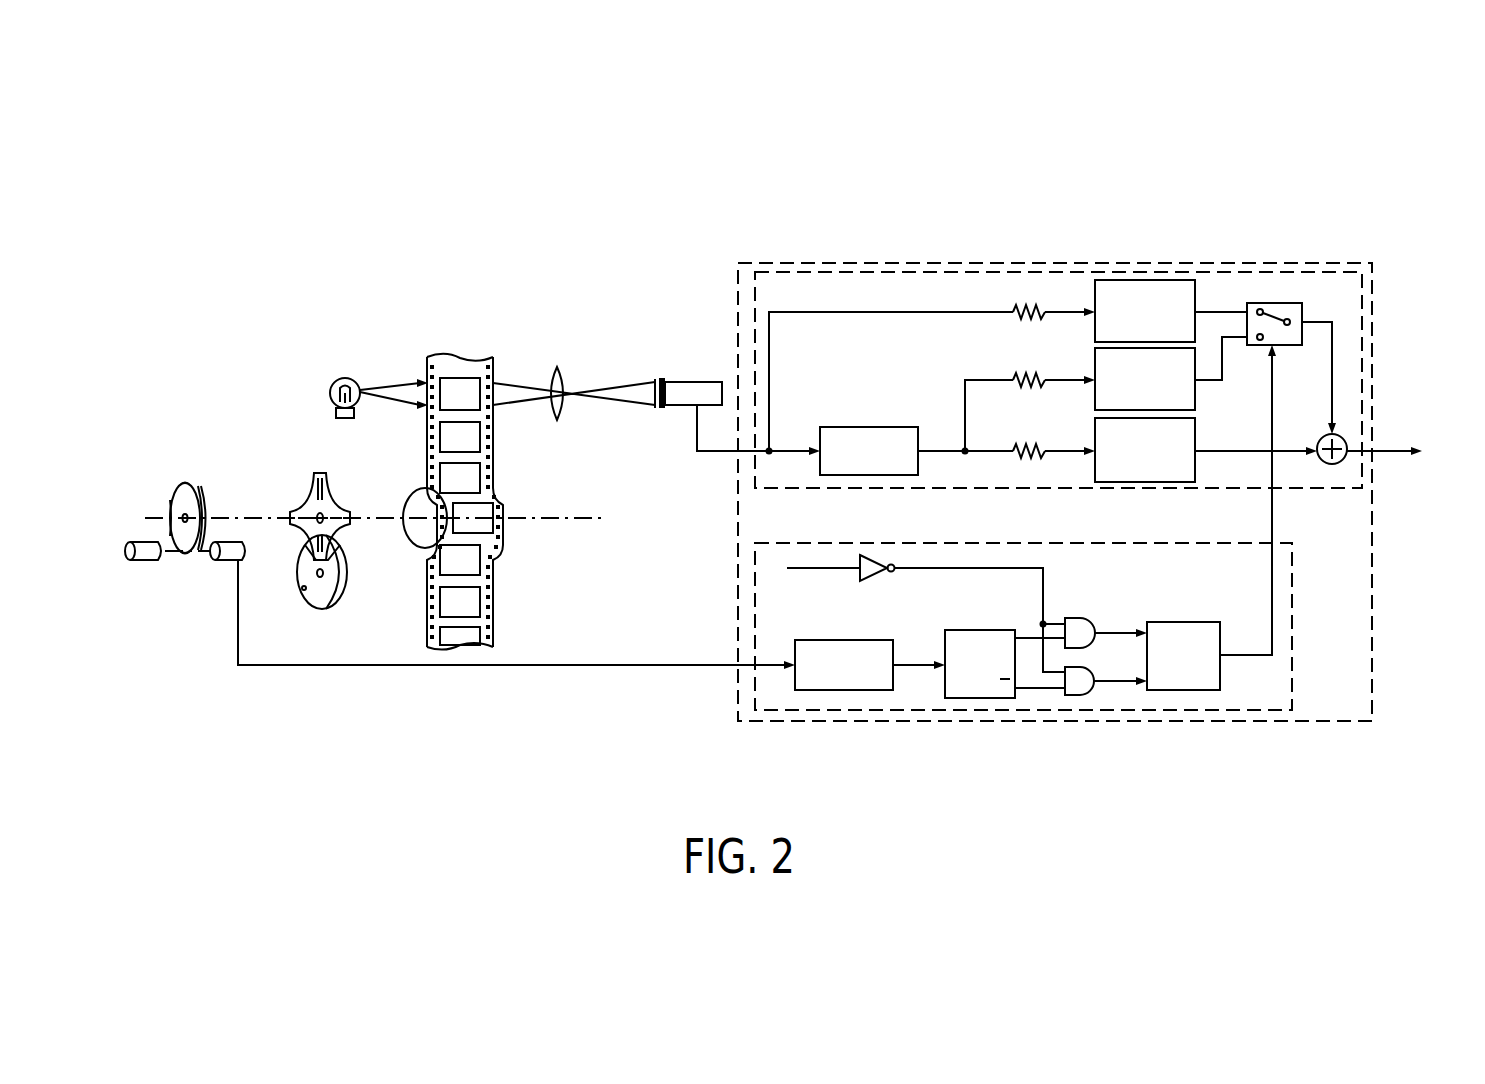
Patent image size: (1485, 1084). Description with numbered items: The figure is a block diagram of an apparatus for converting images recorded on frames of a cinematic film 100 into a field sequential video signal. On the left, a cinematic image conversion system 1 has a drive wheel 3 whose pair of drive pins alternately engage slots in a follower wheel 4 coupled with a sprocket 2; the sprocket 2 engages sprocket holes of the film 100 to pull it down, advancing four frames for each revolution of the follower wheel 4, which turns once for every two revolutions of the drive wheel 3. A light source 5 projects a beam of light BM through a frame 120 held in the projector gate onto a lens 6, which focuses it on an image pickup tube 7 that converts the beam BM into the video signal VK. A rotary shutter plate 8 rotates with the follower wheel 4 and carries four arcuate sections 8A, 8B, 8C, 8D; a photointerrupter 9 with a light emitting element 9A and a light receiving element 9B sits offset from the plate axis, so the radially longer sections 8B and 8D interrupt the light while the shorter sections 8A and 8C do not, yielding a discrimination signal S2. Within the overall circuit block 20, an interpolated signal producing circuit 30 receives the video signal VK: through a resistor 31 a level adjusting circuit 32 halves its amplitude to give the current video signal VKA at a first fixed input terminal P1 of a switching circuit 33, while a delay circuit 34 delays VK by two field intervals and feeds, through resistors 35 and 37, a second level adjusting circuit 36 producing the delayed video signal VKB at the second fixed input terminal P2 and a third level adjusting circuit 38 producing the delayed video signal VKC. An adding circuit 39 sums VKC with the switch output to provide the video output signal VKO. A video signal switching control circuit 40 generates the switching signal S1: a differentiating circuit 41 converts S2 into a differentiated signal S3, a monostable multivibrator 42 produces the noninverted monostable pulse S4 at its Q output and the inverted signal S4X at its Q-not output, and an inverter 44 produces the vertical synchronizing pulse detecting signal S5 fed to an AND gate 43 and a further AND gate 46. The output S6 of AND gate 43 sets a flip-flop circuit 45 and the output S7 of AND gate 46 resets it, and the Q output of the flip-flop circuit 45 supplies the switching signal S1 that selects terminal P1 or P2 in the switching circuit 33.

The cinematic image conversion system 1 is at (352, 332).
The sprocket 2 is at (415, 535).
The drive wheel 3 is at (305, 600).
The follower wheel 4 is at (330, 482).
The light source 5 is at (330, 388).
The lens 6 is at (563, 374).
The image pickup tube 7 is at (697, 380).
The rotary shutter plate 8 is at (200, 492).
The arcuate section 8A is at (205, 505).
The arcuate section 8B is at (185, 486).
The arcuate section 8C is at (170, 500).
The arcuate section 8D is at (190, 556).
The photointerrupter 9 is at (142, 612).
The light emitting element 9A is at (122, 551).
The light receiving element 9B is at (250, 551).
The signal processing circuit 20 is at (900, 263).
The interpolated signal producing circuit 30 is at (1172, 272).
The resistor 31 is at (1012, 312).
The level adjusting circuit 32 is at (1197, 316).
The switching circuit 33 is at (1312, 300).
The delay circuit 34 is at (893, 427).
The resistor 35 is at (1030, 372).
The second level adjusting circuit 36 is at (1197, 407).
The resistor 37 is at (1022, 443).
The third level adjusting circuit 38 is at (1197, 488).
The adding circuit 39 is at (1332, 465).
The video signal switching control circuit 40 is at (780, 712).
The differentiating circuit 41 is at (852, 640).
The monostable multivibrator 42 is at (968, 630).
The AND gate 43 is at (1078, 618).
The inverter 44 is at (875, 555).
The flip-flop circuit 45 is at (1197, 622).
The further AND gate 46 is at (1090, 696).
The cinematic film 100 is at (493, 612).
The frame 120 is at (460, 380).
The beam of light BM is at (632, 407).
The video signal VK is at (700, 452).
The current video signal VKA is at (1248, 305).
The delayed video signal VKB is at (1222, 368).
The delayed video signal VKC is at (1225, 452).
The video output signal VKO is at (1385, 448).
The first fixed input terminal P1 is at (1263, 309).
The second fixed input terminal P2 is at (1278, 346).
The switching signal S1 is at (1272, 598).
The discrimination signal S2 is at (605, 666).
The differentiated signal S3 is at (915, 665).
The noninverted monostable pulse S4 is at (1028, 636).
The inverted pulse signal S4X is at (1040, 689).
The vertical synchronizing pulse detecting signal S5 is at (1043, 568).
The set signal S6 is at (1118, 633).
The reset signal S7 is at (1118, 681).